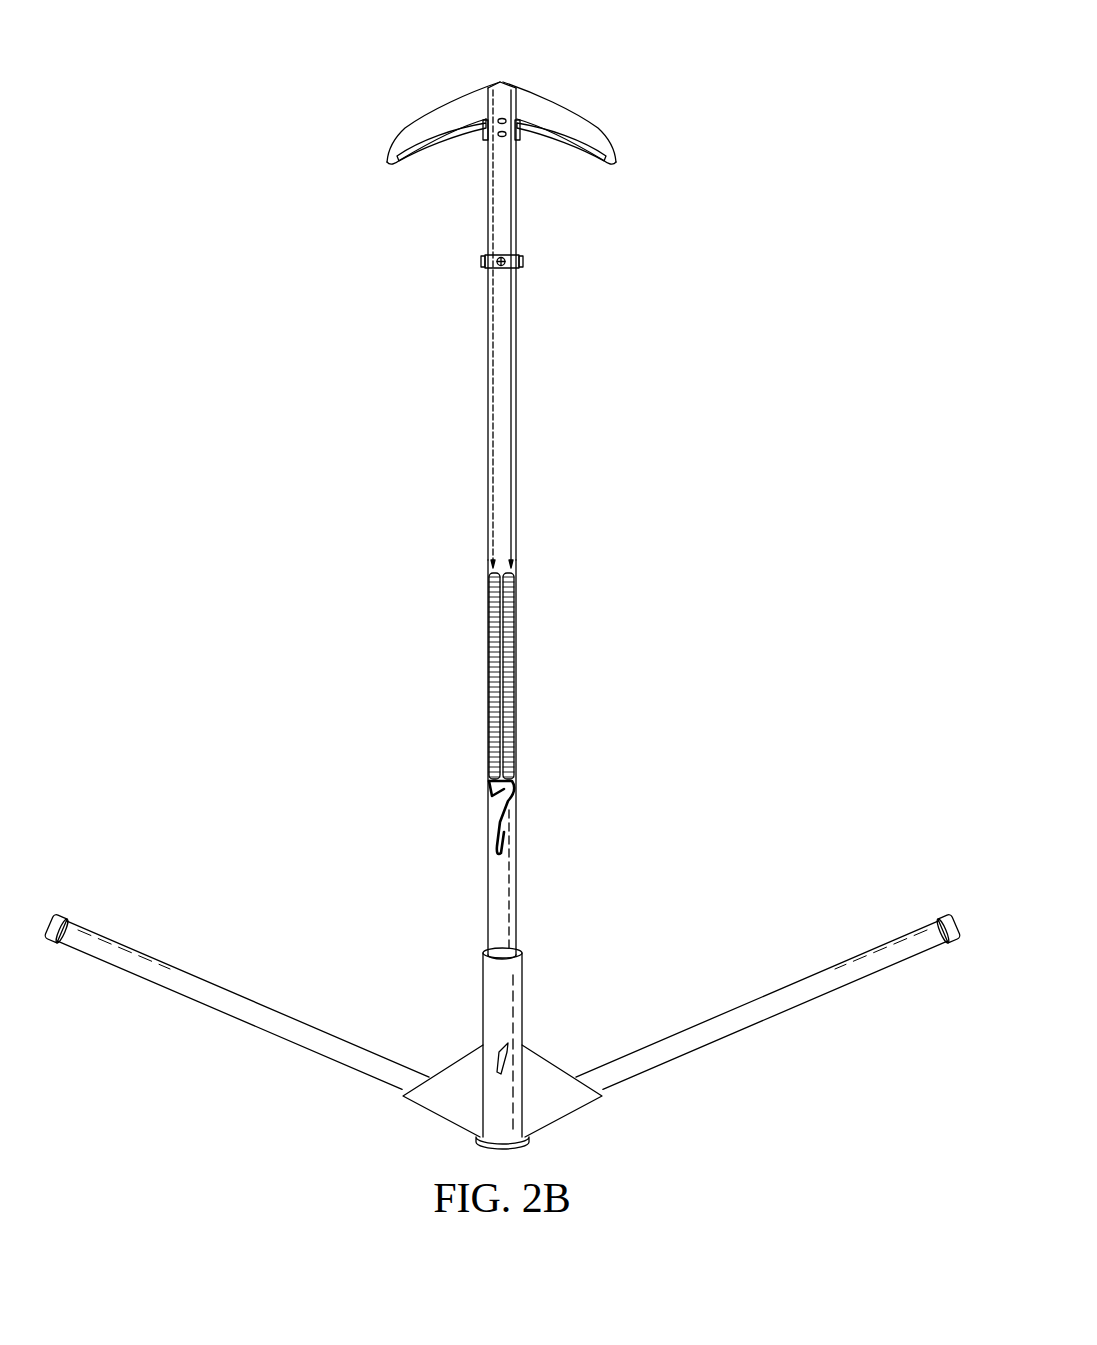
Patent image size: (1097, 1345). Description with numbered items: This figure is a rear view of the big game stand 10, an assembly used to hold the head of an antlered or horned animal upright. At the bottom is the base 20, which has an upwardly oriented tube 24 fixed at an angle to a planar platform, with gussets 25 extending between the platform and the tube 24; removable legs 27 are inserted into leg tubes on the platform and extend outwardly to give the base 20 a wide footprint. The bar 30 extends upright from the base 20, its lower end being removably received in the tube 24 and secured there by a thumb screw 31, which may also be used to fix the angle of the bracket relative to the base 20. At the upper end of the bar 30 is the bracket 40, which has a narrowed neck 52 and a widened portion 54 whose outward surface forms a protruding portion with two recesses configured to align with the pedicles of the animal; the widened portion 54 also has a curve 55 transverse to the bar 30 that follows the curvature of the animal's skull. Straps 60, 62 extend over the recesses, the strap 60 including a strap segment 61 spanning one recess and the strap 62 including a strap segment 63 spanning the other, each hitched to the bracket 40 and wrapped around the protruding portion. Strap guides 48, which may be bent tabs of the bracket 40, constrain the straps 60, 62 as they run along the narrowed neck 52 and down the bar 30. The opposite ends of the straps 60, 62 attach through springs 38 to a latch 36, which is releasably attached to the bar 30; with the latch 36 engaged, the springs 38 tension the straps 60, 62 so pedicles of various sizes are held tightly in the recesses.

The big game stand 10 is at (226, 98).
The base 20 is at (476, 984).
The tube 24 is at (522, 1013).
The gussets 25 is at (436, 1106).
The removable legs 27 is at (218, 992).
The bar 30 is at (478, 893).
The thumb screw 31 is at (513, 1059).
The latch 36 is at (516, 786).
The springs 38 is at (491, 597).
The bracket 40 is at (574, 100).
The strap guides 48 is at (522, 122).
The narrowed neck 52 is at (487, 219).
The widened portion 54 is at (456, 104).
The curve 55 is at (599, 164).
The strap 60 is at (514, 385).
The strap segment 61 is at (446, 141).
The strap 62 is at (490, 419).
The strap segment 63 is at (571, 146).